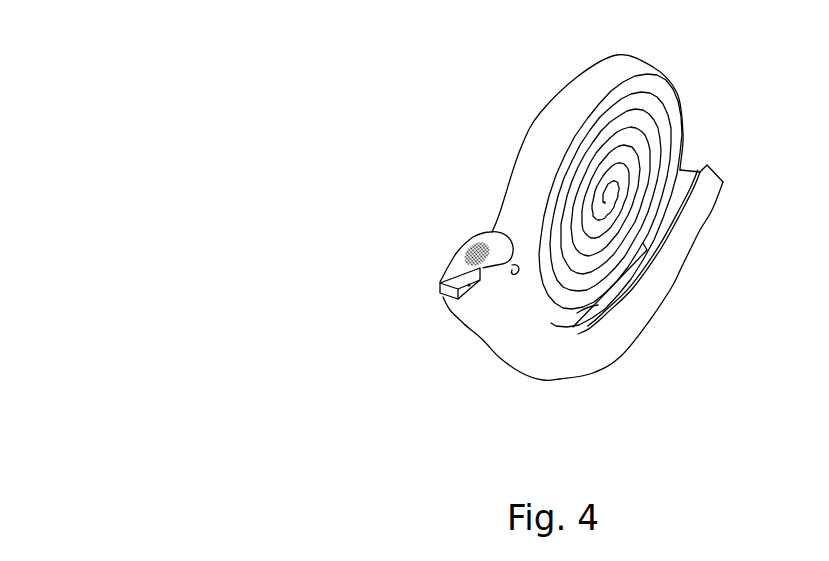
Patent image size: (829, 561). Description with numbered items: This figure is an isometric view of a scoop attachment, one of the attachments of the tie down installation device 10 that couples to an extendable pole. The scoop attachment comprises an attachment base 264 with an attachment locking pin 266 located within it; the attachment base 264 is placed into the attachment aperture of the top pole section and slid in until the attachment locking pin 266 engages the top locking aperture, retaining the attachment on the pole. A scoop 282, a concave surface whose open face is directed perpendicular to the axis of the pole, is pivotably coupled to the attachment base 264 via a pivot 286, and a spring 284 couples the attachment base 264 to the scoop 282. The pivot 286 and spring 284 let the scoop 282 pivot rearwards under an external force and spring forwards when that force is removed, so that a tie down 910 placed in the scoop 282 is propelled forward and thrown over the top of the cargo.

The spool assembly 10 is at (150, 188).
The tie down 910 is at (546, 141).
The scoop 282 is at (560, 350).
The spring 284 is at (470, 257).
The attachment base 264 is at (451, 276).
The attachment locking pin 266 is at (468, 287).
The pivot 286 is at (516, 272).